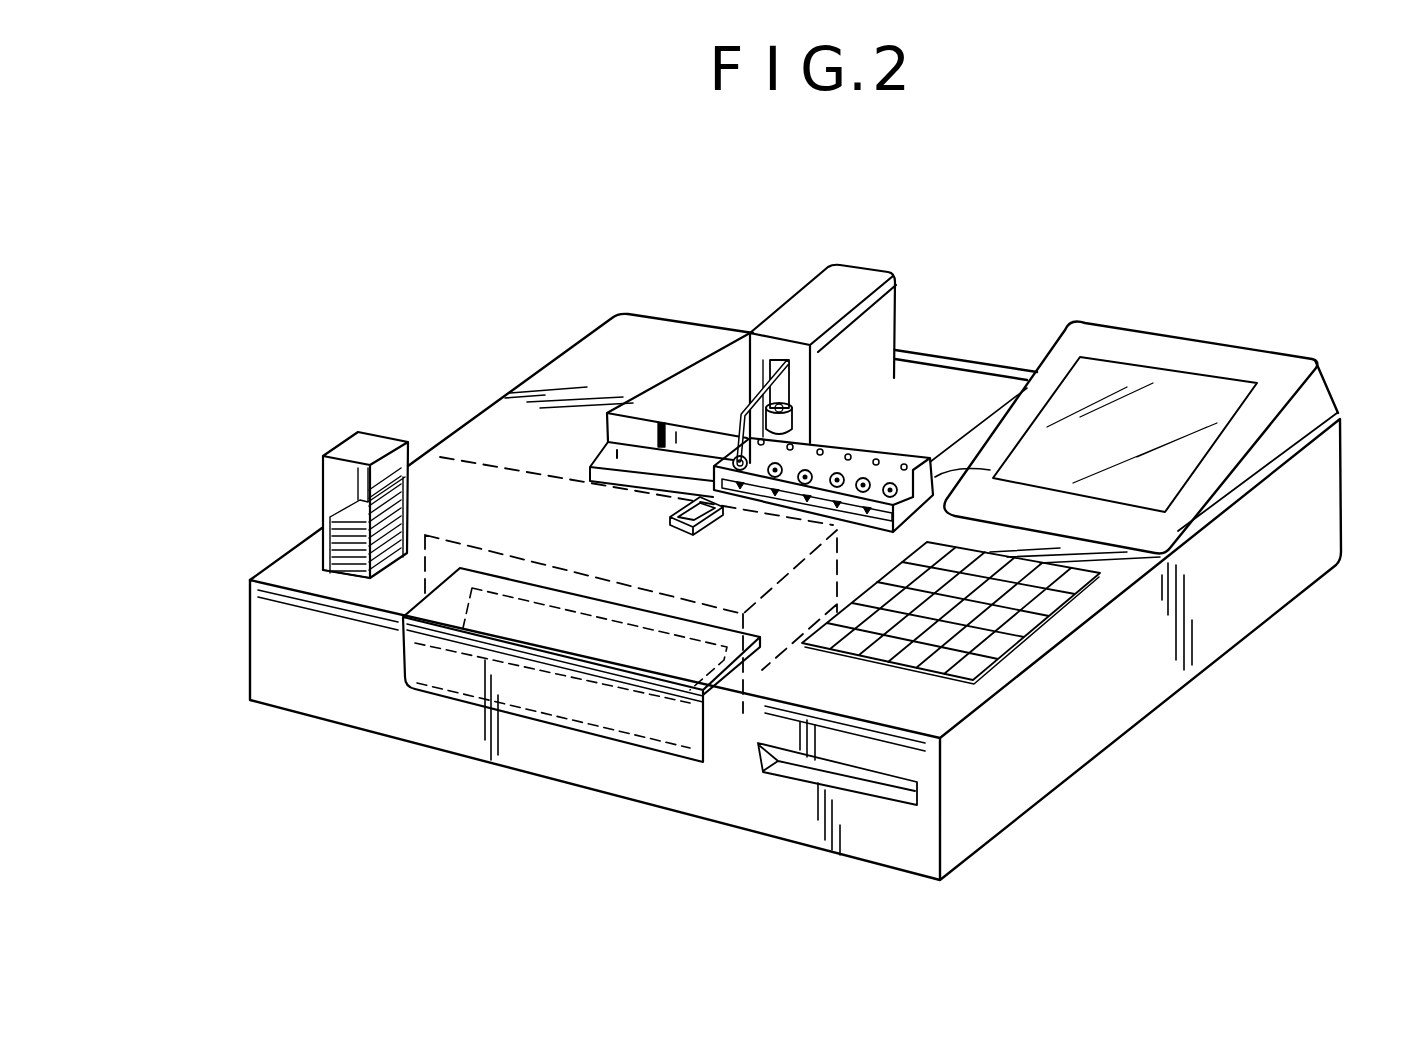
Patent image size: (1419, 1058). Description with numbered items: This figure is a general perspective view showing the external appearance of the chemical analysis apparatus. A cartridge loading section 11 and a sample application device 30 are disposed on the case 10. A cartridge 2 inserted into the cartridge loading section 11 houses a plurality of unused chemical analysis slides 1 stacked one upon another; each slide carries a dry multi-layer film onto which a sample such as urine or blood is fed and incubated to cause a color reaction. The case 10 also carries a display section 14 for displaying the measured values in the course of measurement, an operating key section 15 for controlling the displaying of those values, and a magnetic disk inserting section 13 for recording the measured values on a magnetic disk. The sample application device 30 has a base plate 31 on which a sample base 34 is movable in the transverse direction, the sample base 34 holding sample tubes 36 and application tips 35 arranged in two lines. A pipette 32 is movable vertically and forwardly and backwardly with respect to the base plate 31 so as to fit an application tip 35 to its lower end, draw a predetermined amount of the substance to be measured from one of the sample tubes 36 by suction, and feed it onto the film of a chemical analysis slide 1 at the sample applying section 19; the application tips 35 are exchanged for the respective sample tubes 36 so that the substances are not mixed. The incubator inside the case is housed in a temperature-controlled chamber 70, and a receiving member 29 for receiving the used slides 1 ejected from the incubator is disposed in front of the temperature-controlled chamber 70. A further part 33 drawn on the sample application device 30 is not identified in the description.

The chemical analysis slide 1 is at (395, 468).
The cartridge 2 is at (373, 437).
The case 10 is at (560, 367).
The cartridge loading section 11 is at (340, 577).
The magnetic disk inserting section 13 is at (865, 790).
The display section 14 is at (1165, 377).
The operating key section 15 is at (1030, 625).
The sample applying section 19 is at (660, 500).
The receiving member 29 is at (560, 703).
The sample application device 30 is at (912, 306).
The base plate 31 is at (700, 363).
The pipette 32 is at (740, 412).
The pipette head 33 is at (825, 398).
The sample base 34 is at (998, 480).
The application tip 35 is at (915, 452).
The sample tube 36 is at (855, 478).
The temperature-controlled chamber 70 is at (523, 533).